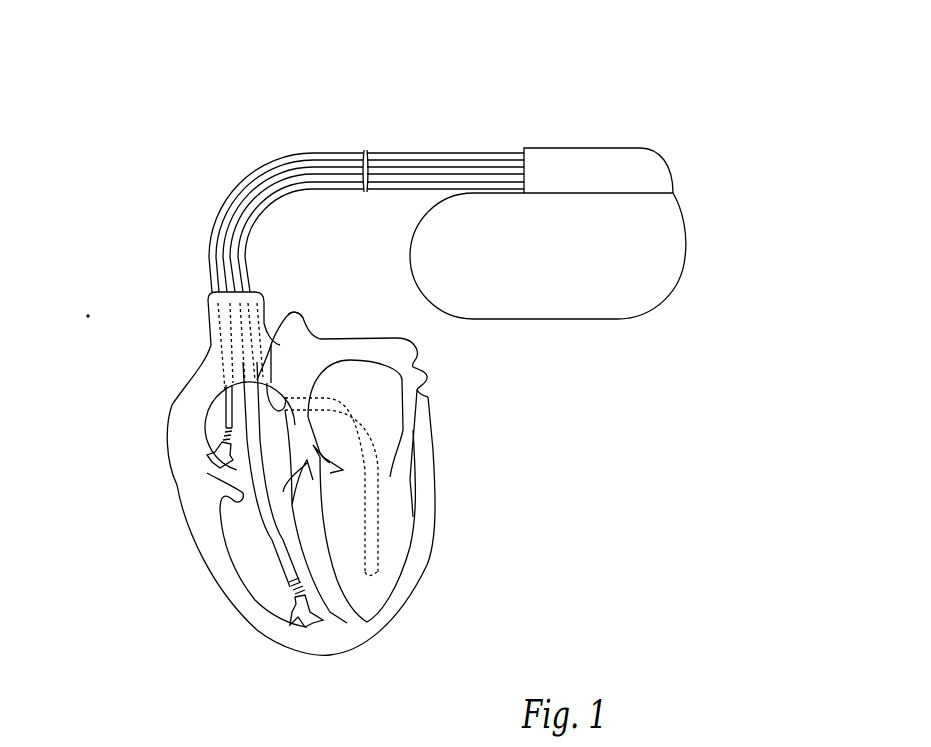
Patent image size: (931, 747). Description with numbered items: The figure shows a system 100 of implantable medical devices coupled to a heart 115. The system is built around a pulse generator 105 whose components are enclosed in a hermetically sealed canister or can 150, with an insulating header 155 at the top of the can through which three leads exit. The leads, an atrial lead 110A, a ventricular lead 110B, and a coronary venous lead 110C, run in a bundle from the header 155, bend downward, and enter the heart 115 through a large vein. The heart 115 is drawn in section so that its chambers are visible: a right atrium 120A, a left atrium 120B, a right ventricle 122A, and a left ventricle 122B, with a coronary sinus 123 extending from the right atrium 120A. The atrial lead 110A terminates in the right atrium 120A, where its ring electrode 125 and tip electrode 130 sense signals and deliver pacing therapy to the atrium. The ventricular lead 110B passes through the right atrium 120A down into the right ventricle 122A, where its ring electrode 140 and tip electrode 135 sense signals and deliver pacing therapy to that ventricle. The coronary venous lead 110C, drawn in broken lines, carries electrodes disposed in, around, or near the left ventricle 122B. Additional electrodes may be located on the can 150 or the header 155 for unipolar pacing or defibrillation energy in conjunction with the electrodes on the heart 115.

The system 100 is at (713, 62).
The pulse generator 105 is at (650, 147).
The insulating header 155 is at (657, 162).
The can 150 is at (685, 230).
The atrial lead 110A is at (343, 152).
The ventricular lead 110B is at (313, 160).
The coronary venous lead 110C is at (343, 190).
The heart 115 is at (436, 493).
The coronary sinus 123 is at (288, 337).
The right atrium 120A is at (220, 417).
The left atrium 120B is at (372, 383).
The right ventricle 122A is at (240, 520).
The left ventricle 122B is at (348, 547).
The ring electrode 125 is at (223, 435).
The tip electrode 130 is at (210, 467).
The ring electrode 140 is at (287, 590).
The tip electrode 135 is at (310, 618).